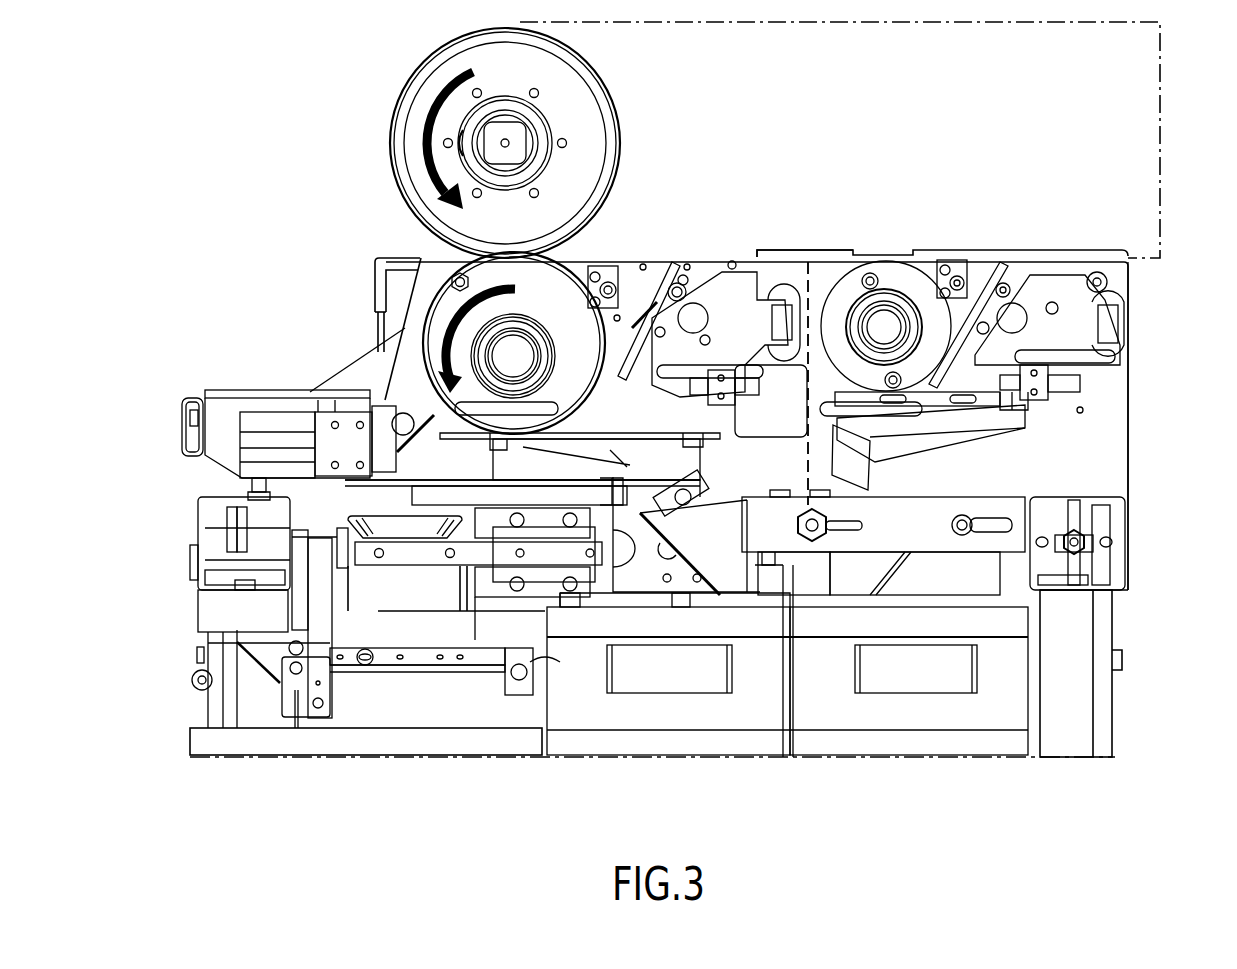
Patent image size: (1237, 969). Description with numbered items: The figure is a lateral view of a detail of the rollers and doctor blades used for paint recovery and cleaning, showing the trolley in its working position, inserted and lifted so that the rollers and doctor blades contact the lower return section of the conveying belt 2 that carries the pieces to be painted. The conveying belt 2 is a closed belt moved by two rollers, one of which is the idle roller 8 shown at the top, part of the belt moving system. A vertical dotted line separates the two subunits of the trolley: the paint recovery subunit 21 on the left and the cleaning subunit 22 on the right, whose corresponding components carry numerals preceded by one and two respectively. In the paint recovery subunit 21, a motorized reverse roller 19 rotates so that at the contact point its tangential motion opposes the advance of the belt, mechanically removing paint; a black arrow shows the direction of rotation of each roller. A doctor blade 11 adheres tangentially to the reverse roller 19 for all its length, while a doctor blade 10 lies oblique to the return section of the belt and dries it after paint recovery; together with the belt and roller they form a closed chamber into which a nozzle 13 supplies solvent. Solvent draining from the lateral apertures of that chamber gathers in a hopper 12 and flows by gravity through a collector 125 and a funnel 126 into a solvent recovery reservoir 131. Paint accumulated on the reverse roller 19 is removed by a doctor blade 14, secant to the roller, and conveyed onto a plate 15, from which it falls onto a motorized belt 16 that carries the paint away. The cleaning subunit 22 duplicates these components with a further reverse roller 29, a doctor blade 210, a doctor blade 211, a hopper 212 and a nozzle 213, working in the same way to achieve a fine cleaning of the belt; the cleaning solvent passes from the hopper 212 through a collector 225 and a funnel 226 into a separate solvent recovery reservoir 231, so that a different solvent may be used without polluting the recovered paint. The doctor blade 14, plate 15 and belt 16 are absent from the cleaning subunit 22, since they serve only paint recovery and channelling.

The conveying belt 2 is at (758, 257).
The idle roller 8 is at (563, 76).
The doctor blade 10 is at (660, 300).
The doctor blade 11 is at (677, 262).
The hopper 12 is at (583, 437).
The nozzle 13 is at (592, 266).
The doctor blade 14 is at (393, 402).
The plate 15 is at (397, 423).
The belt 16 is at (383, 530).
The reverse roller 19 is at (455, 316).
The paint recovery subunit 21 is at (742, 168).
The cleaning subunit 22 is at (975, 168).
The reverse roller 29 is at (866, 272).
The collector 125 is at (667, 490).
The funnel 126 is at (722, 530).
The solvent recovery reservoir 131 is at (512, 674).
The doctor blade 210 is at (998, 263).
The doctor blade 211 is at (1052, 268).
The hopper 212 is at (917, 443).
The nozzle 213 is at (955, 264).
The collector 225 is at (818, 408).
The funnel 226 is at (870, 565).
The solvent recovery reservoir 231 is at (1013, 665).